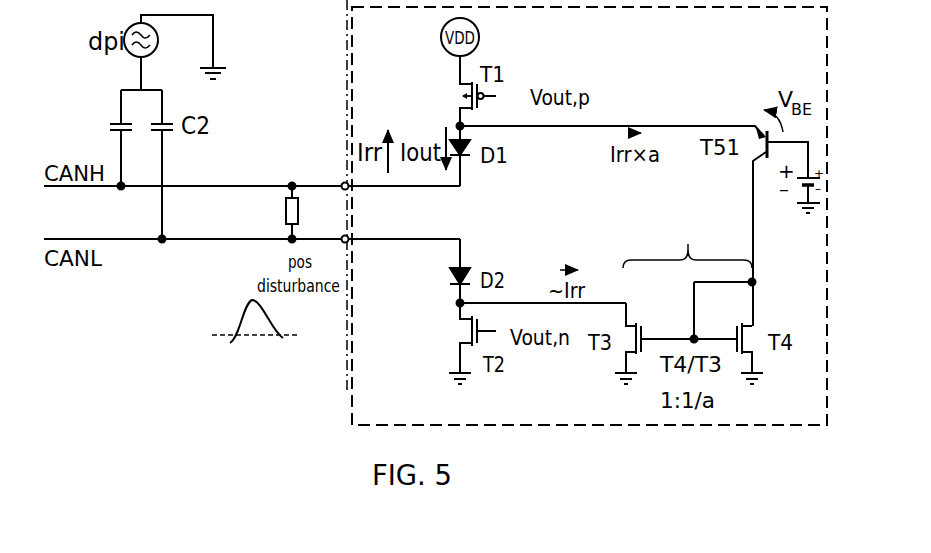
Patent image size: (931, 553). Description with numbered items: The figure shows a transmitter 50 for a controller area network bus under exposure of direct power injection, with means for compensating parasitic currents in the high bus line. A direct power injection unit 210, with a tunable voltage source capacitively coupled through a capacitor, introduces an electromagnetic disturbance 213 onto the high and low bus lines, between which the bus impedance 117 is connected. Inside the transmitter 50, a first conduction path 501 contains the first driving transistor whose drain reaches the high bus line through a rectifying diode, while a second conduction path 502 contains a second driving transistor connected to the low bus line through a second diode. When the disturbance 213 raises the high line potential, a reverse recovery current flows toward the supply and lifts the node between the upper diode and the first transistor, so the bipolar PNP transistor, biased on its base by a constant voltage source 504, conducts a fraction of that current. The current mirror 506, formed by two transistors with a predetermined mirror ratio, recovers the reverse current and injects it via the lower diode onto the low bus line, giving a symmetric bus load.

The DPI unit 210 is at (231, 61).
The CAN impedance 117 is at (285, 211).
The electromagnetic disturbance 213 is at (211, 353).
The first conduction path 501 is at (516, 67).
The second conduction path 502 is at (431, 352).
The constant voltage source 504 is at (762, 177).
The current mirror 506 is at (689, 303).
The transmitter 50 is at (578, 427).